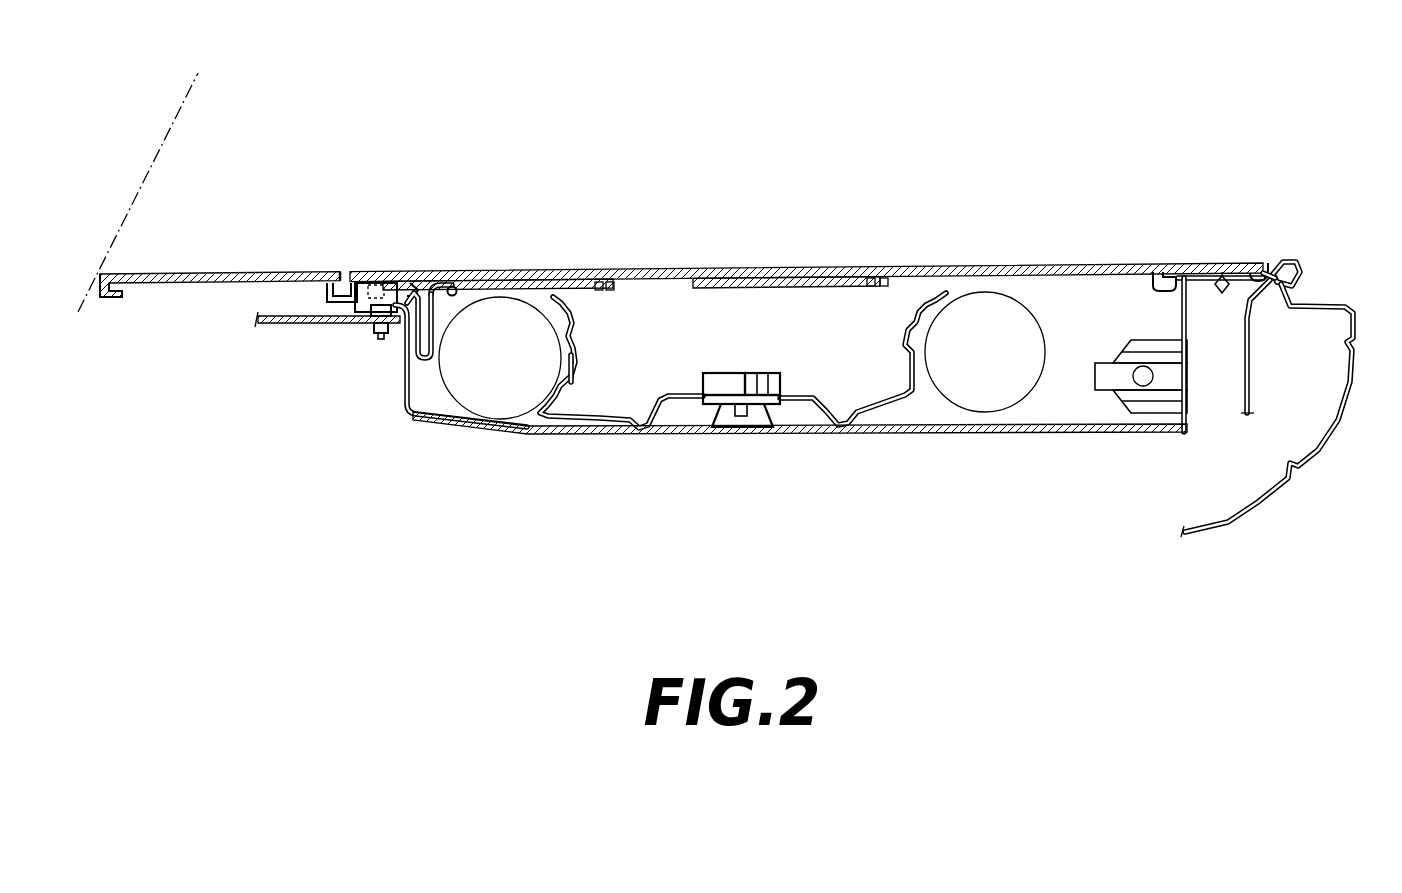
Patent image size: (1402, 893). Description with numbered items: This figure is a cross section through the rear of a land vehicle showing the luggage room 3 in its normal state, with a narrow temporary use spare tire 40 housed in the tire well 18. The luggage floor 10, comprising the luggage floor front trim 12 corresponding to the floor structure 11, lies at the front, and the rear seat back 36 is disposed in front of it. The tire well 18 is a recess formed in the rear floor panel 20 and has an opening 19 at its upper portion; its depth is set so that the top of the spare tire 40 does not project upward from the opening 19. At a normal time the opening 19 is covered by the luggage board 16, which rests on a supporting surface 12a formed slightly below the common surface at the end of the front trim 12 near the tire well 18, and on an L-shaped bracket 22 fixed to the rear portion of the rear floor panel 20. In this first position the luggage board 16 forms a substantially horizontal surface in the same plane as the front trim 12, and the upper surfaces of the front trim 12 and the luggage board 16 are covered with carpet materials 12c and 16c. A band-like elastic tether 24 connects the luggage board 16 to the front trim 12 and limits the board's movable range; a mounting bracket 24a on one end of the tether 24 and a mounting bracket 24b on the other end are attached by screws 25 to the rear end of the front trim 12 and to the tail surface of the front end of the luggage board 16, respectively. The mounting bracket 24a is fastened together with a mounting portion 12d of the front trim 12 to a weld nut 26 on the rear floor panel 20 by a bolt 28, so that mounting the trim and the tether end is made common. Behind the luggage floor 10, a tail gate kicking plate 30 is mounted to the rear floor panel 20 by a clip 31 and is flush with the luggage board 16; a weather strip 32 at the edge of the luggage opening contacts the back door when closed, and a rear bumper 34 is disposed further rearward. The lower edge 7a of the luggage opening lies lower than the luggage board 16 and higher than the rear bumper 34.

The luggage room 3 is at (940, 135).
The lower edge 7a is at (1280, 267).
The luggage floor 10 is at (599, 244).
The floor structure 11 is at (316, 260).
The luggage floor front trim 12 is at (270, 276).
The supporting surface 12a is at (360, 273).
The carpet material 12c is at (222, 274).
The mounting portion 12d is at (370, 323).
The luggage board 16 is at (727, 268).
The carpet material 16c is at (858, 270).
The tire well 18 is at (1072, 292).
The opening 19 is at (1112, 293).
The rear floor panel 20 is at (870, 436).
The L-shaped bracket 22 is at (1155, 263).
The tether 24 is at (430, 358).
The mounting bracket 24a is at (403, 388).
The mounting bracket 24b is at (458, 283).
The screws 25 is at (420, 283).
The weld nut 26 is at (380, 336).
The bolt 28 is at (378, 277).
The tail gate kicking plate 30 is at (1233, 260).
The clip 31 is at (1222, 296).
The weather strip 32 is at (1297, 260).
The rear bumper 34 is at (1315, 470).
The rear seat back 36 is at (172, 128).
The temporary use spare tire 40 is at (1010, 405).